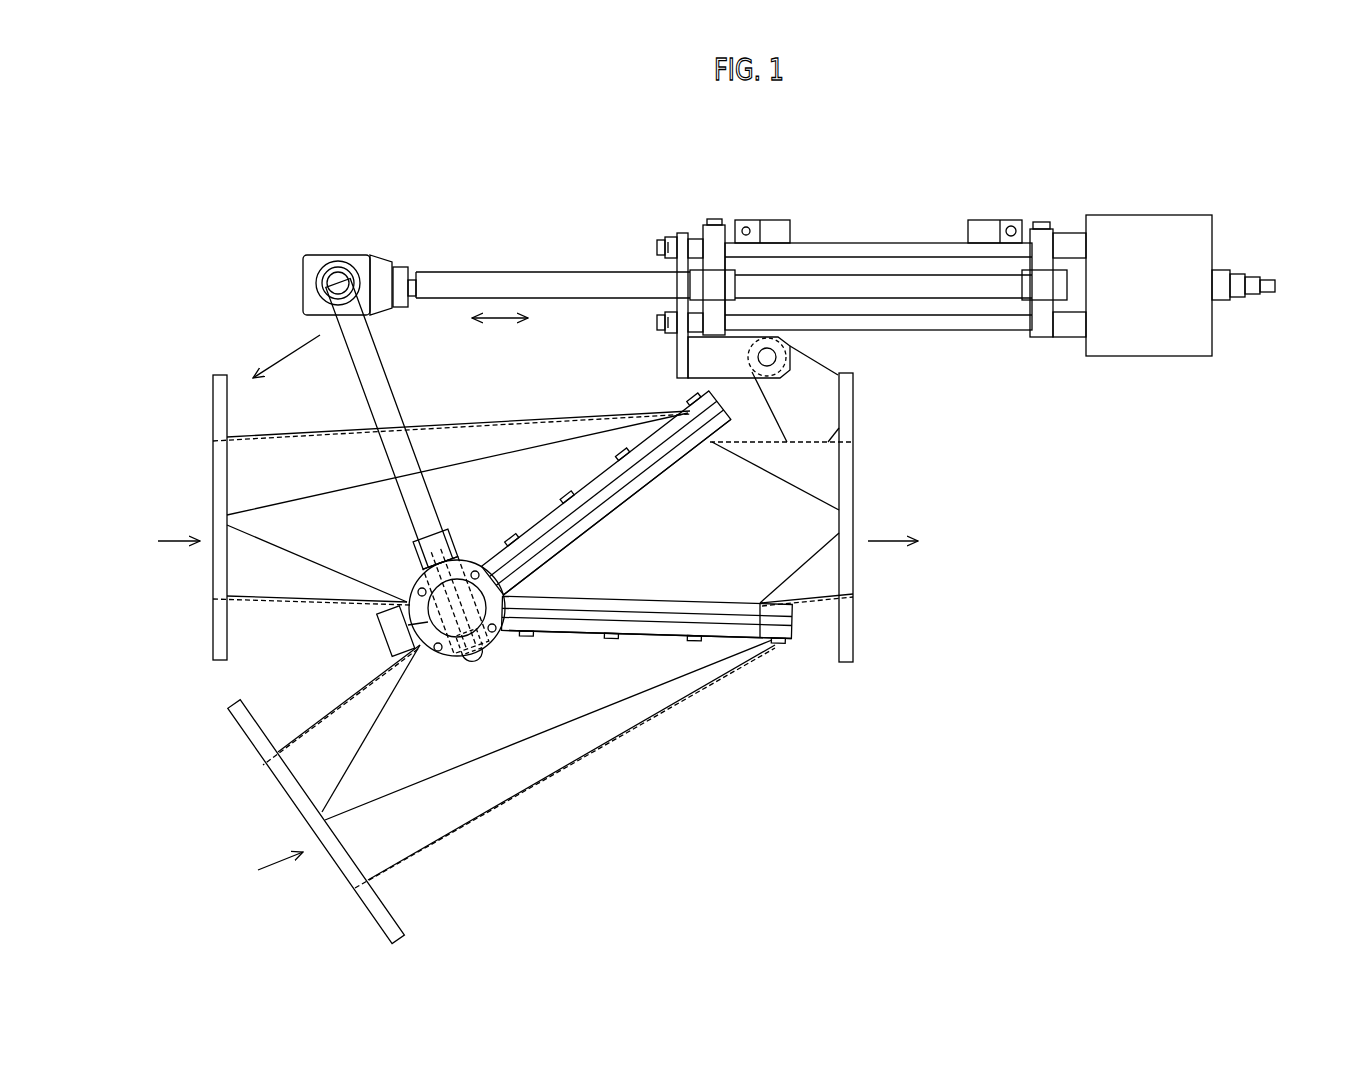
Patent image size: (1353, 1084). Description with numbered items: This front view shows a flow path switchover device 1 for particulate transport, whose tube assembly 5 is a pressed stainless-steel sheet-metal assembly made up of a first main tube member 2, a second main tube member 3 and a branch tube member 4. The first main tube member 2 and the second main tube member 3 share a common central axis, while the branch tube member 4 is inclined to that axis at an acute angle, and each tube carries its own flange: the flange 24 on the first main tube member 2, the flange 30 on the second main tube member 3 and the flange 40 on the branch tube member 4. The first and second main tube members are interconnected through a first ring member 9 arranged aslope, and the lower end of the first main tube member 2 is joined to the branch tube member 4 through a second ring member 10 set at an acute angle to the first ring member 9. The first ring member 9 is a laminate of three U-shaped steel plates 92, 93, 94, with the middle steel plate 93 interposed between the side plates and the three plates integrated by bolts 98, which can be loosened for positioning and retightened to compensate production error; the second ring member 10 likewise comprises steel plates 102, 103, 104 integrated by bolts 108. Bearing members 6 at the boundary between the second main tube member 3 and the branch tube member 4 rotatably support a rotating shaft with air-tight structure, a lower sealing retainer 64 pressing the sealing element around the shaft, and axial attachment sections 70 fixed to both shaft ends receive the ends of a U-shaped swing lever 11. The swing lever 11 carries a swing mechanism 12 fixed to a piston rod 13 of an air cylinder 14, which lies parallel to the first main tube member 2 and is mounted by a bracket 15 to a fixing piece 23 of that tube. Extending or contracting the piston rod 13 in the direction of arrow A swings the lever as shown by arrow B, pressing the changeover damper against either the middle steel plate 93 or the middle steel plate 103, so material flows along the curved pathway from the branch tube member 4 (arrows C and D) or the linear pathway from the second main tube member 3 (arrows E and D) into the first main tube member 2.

The flow path switchover device 1 is at (893, 163).
The first main tube member 2 is at (793, 537).
The second main tube member 3 is at (553, 447).
The branch tube member 4 is at (516, 777).
The tube assembly 5 is at (695, 688).
The bearing members 6 is at (447, 655).
The first ring member 9 is at (606, 482).
The second ring member 10 is at (648, 646).
The swing lever 11 is at (392, 410).
The swing mechanism 12 is at (360, 253).
The piston rod 13 is at (532, 270).
The air cylinder 14 is at (895, 253).
The bracket 15 is at (683, 370).
The fixing piece 23 is at (820, 375).
The flange 24 is at (848, 490).
The flange 30 is at (222, 497).
The flange 40 is at (288, 790).
The lower sealing retainer 64 is at (398, 644).
The axial attachment sections 70 is at (405, 625).
The steel plate 92 is at (615, 470).
The middle steel plate 93 is at (640, 468).
The steel plate 94 is at (612, 510).
The bolts 98 is at (565, 500).
The steel plate 102 is at (667, 630).
The middle steel plate 103 is at (610, 615).
The steel plate 104 is at (545, 597).
The bolts 108 is at (608, 638).